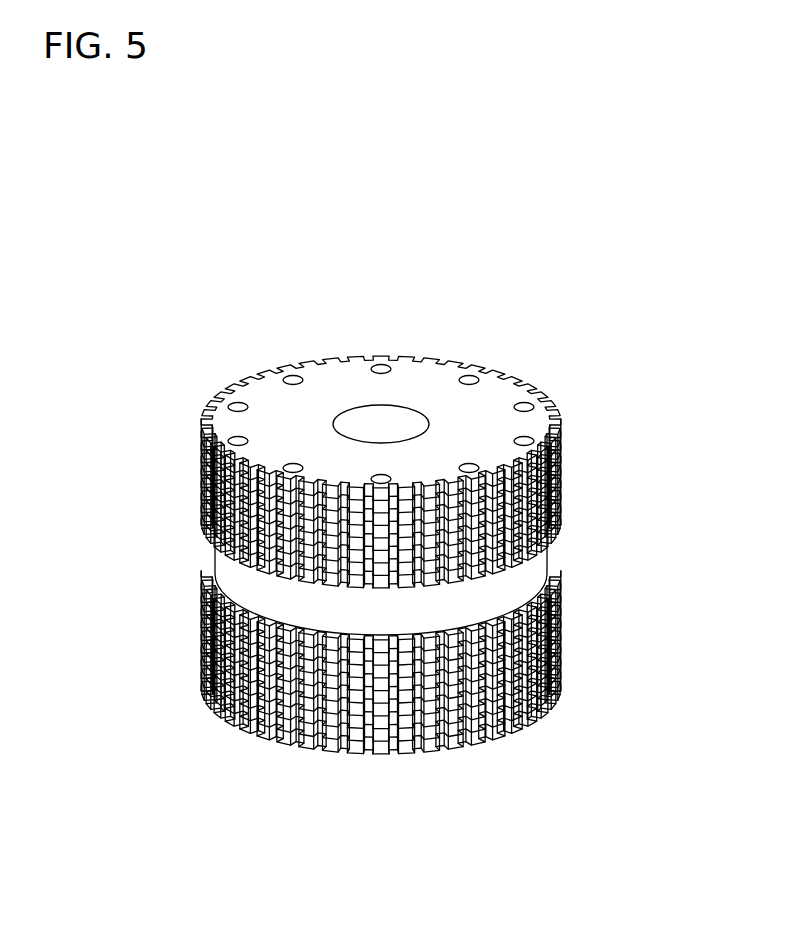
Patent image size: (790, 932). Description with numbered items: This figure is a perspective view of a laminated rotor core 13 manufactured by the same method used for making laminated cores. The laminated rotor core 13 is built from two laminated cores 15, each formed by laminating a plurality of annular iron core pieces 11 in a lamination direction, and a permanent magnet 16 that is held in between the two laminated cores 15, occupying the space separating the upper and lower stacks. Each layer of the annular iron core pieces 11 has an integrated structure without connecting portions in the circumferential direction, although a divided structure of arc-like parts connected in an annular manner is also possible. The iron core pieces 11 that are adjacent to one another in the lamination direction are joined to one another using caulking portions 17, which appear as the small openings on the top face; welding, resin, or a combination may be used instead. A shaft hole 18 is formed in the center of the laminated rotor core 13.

The iron core piece 11 is at (203, 483).
The laminated rotor core 13 is at (496, 286).
The laminated core 15 is at (524, 368).
The permanent magnet 16 is at (525, 588).
The caulking portion 17 is at (296, 380).
The shaft hole 18 is at (390, 423).